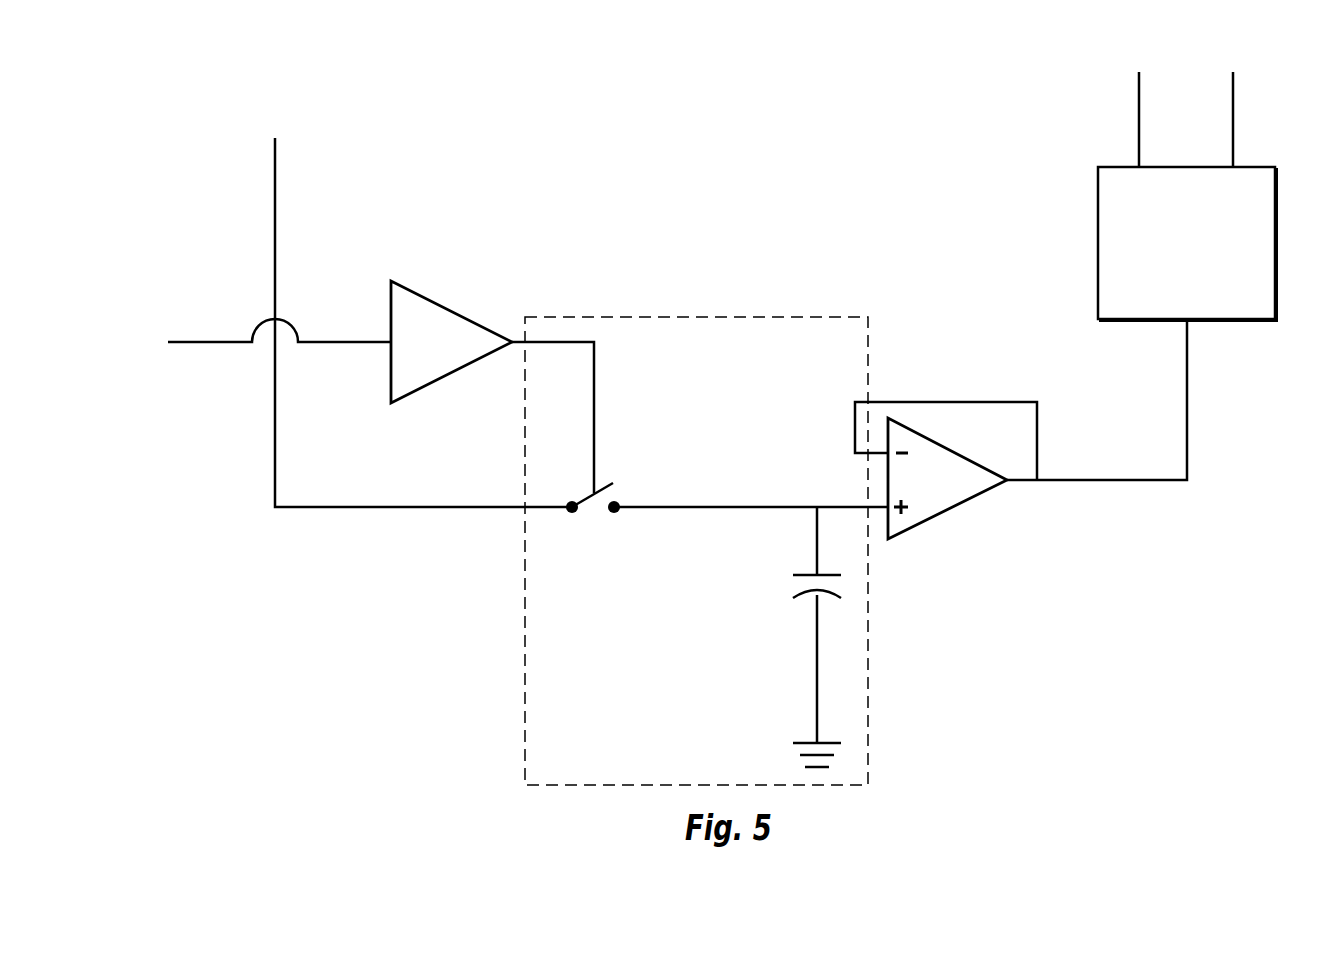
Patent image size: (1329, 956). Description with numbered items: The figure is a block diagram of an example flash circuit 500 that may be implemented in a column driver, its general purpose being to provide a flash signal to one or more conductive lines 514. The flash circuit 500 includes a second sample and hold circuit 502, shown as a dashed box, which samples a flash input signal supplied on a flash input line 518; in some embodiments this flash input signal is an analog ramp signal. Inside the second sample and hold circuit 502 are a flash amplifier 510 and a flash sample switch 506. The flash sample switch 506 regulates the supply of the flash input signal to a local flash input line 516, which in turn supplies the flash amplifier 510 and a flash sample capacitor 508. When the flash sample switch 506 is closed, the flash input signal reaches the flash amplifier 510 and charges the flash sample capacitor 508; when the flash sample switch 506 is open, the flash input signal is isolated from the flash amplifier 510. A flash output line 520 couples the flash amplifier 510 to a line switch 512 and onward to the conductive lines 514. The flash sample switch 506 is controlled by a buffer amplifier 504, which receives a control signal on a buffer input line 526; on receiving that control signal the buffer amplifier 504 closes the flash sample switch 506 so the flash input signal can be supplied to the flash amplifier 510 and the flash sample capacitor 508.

The flash circuit 500 is at (237, 148).
The second sample and hold circuit 502 is at (862, 349).
The buffer amplifier 504 is at (391, 302).
The flash sample switch 506 is at (626, 458).
The flash sample capacitor 508 is at (850, 589).
The flash amplifier 510 is at (917, 528).
The line switch 512 is at (1168, 258).
The conductive lines 514 is at (1233, 123).
The local flash input line 516 is at (787, 507).
The flash input line 518 is at (372, 507).
The flash output line 520 is at (1187, 456).
The buffer input line 526 is at (224, 342).